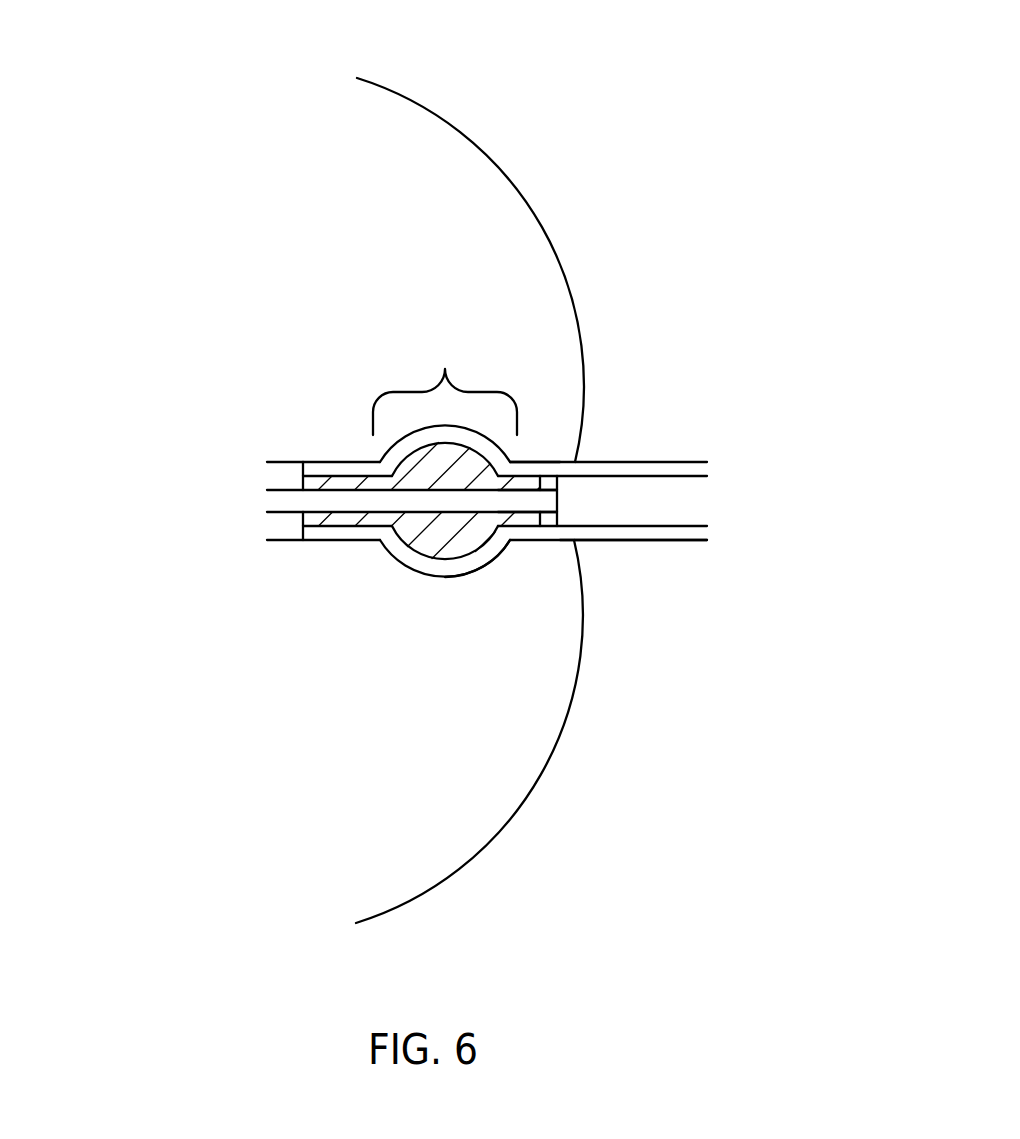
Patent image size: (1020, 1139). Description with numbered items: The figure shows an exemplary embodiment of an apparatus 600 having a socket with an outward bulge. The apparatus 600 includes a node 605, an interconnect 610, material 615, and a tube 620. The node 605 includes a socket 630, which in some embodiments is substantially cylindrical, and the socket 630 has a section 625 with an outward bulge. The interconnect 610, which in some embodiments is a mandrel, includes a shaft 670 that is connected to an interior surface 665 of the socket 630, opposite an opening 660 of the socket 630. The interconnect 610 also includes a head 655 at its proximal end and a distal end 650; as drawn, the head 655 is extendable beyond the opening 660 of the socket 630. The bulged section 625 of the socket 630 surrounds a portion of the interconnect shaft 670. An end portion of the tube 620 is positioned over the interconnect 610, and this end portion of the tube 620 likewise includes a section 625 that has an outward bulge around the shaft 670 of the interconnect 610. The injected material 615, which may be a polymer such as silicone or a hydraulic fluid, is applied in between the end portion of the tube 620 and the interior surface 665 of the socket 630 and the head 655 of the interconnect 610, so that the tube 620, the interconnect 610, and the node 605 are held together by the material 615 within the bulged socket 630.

The apparatus 600 is at (715, 125).
The node 605 is at (97, 416).
The interconnect 610 is at (557, 510).
The material 615 is at (410, 535).
The tube 620 is at (480, 562).
The section 625 is at (445, 369).
The socket 630 is at (543, 458).
The distal end 650 is at (313, 508).
The head 655 is at (558, 495).
The opening 660 is at (573, 540).
The interior surface 665 is at (303, 477).
The shaft 670 is at (505, 508).